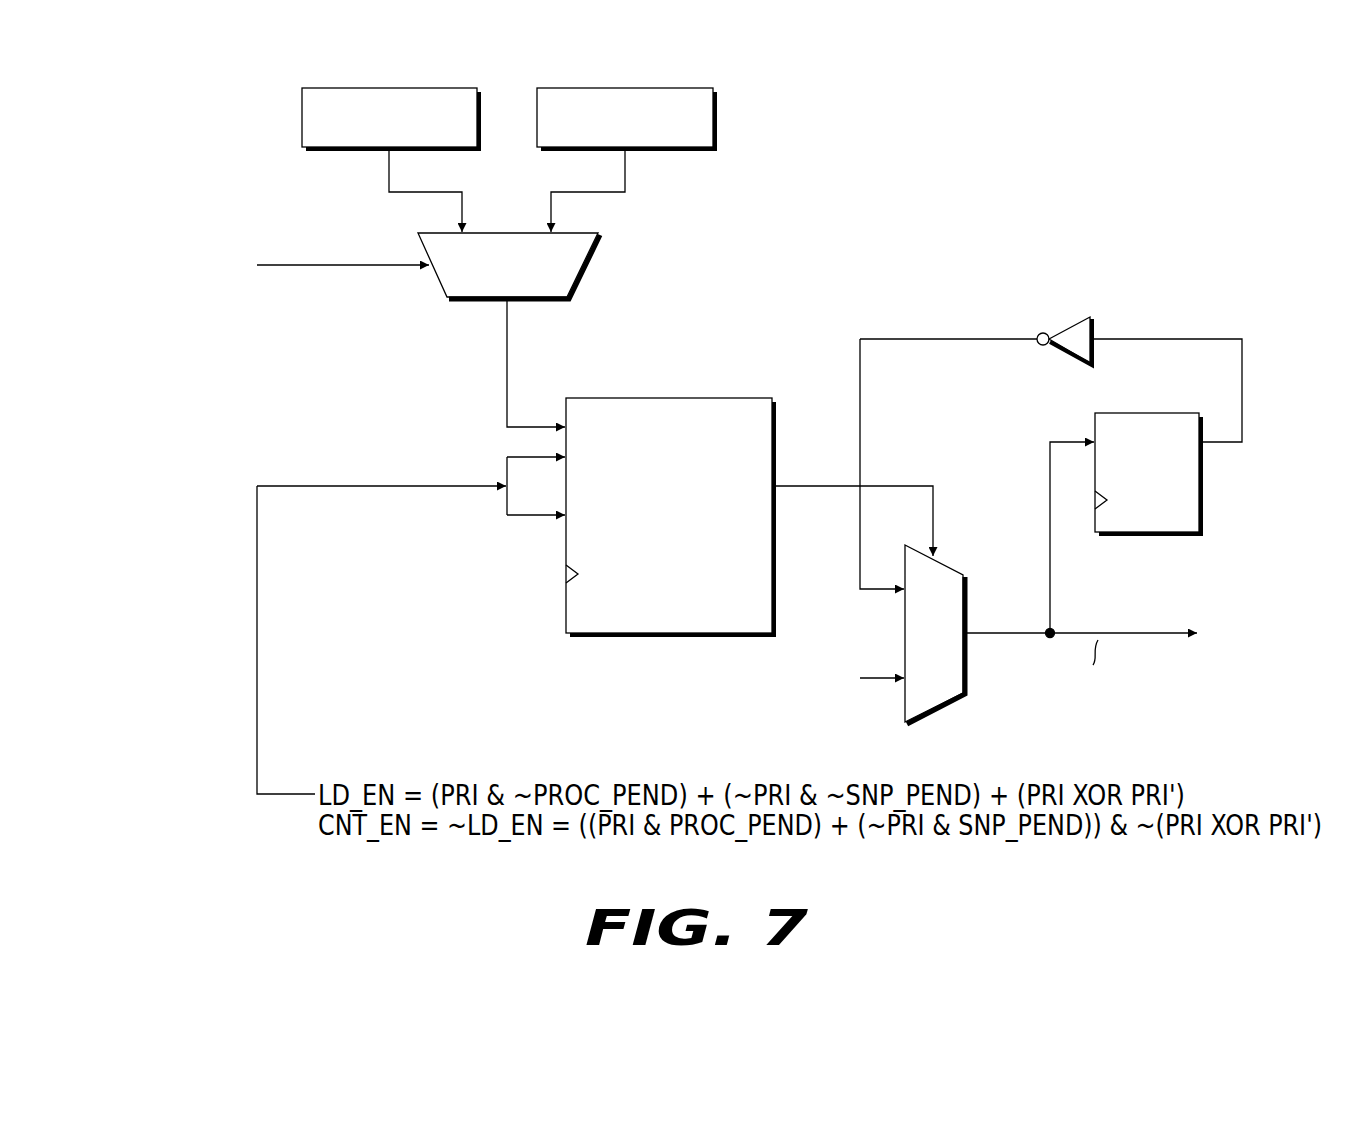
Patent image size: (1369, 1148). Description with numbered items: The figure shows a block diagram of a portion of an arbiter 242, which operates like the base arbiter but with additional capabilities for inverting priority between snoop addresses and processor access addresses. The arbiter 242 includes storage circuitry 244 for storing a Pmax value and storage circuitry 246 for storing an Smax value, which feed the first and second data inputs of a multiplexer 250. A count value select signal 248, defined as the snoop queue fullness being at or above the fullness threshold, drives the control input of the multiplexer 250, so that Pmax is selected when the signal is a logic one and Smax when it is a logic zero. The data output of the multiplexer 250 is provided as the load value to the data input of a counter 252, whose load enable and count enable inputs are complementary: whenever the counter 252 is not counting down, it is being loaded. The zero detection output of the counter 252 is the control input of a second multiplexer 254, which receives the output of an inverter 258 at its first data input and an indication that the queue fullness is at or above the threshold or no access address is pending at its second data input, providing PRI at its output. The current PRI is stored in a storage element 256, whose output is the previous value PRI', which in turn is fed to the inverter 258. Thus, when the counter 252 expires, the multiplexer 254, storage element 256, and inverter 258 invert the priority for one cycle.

The arbiter 242 is at (1161, 147).
The storage circuitry 244 is at (302, 117).
The storage circuitry 246 is at (717, 121).
The count value select signal 248 is at (325, 268).
The multiplexer 250 is at (543, 301).
The counter 252 is at (698, 398).
The multiplexer 254 is at (998, 592).
The storage element 256 is at (1140, 413).
The inverter 258 is at (1075, 322).